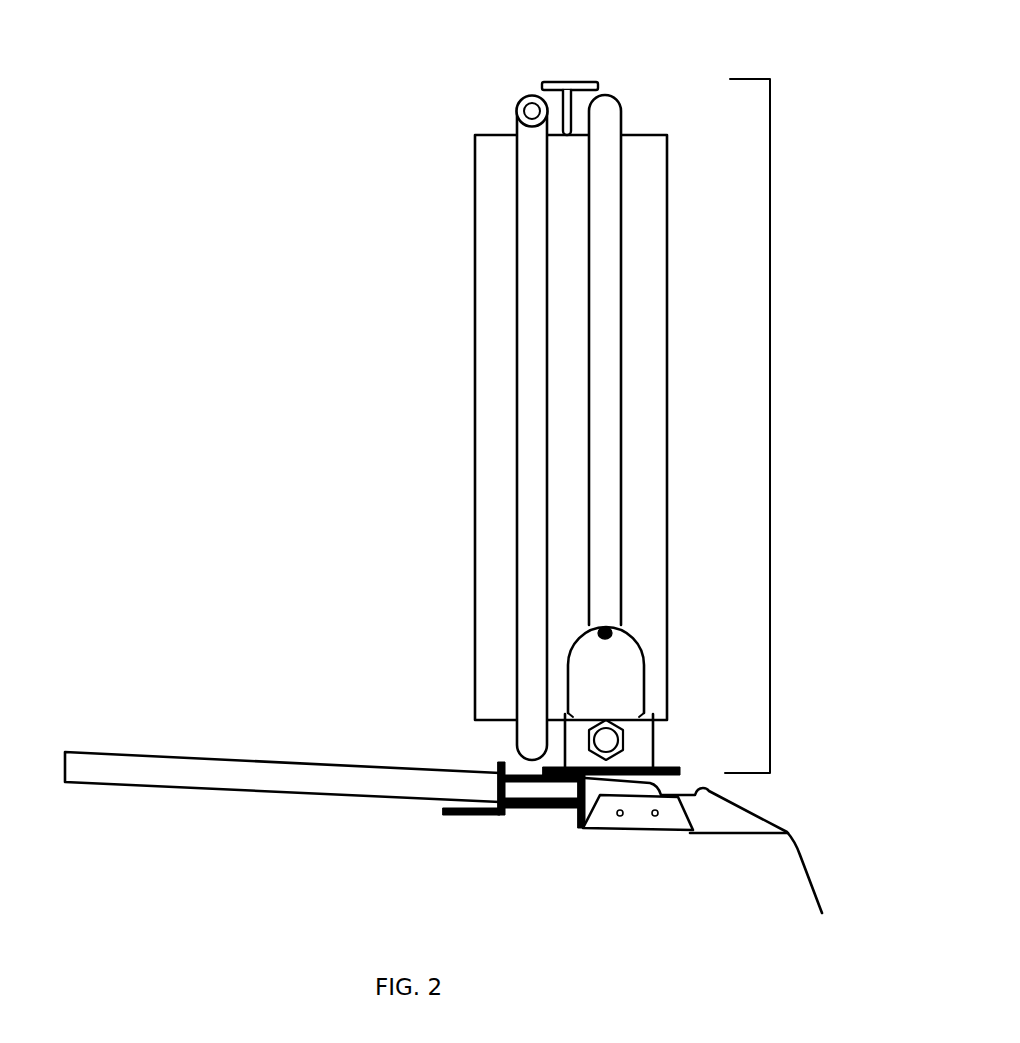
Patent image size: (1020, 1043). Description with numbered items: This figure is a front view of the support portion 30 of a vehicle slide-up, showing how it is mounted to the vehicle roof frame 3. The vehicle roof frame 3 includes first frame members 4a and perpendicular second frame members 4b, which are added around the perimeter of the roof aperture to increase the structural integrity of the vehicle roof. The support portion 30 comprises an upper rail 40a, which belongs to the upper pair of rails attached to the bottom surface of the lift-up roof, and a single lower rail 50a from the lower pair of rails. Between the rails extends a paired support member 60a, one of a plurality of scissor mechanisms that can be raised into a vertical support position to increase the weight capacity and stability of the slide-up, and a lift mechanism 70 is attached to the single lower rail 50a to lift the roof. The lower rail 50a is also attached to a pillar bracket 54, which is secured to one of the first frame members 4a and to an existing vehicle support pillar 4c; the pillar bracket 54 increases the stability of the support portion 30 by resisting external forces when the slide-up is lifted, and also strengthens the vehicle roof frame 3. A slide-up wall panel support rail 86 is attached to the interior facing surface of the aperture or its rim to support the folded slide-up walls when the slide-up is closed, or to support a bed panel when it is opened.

The vehicle roof frame 3 is at (231, 718).
The first frame member 4a is at (235, 790).
The second frame member 4b is at (518, 803).
The vehicle support pillar 4c is at (778, 835).
The support portion 30 is at (770, 437).
The upper rail 40a is at (568, 82).
The single lower rail 50a is at (657, 747).
The pillar bracket 54 is at (613, 832).
The paired support member 60a is at (516, 153).
The lift mechanism 70 is at (645, 672).
The slide-up wall panel support rail 86 is at (475, 815).